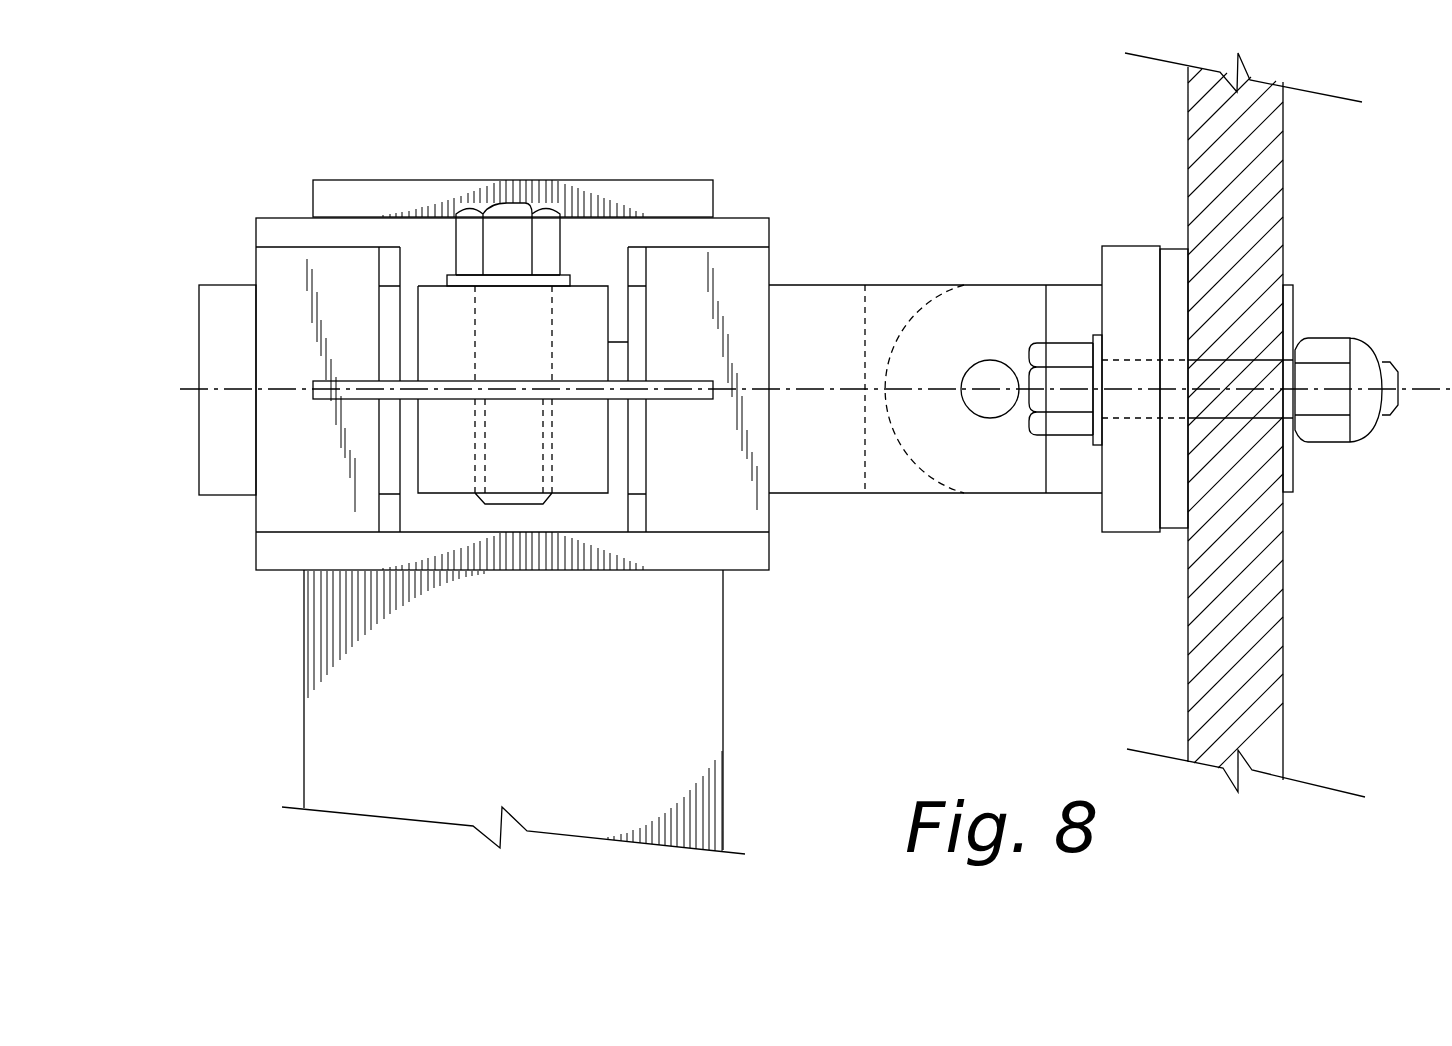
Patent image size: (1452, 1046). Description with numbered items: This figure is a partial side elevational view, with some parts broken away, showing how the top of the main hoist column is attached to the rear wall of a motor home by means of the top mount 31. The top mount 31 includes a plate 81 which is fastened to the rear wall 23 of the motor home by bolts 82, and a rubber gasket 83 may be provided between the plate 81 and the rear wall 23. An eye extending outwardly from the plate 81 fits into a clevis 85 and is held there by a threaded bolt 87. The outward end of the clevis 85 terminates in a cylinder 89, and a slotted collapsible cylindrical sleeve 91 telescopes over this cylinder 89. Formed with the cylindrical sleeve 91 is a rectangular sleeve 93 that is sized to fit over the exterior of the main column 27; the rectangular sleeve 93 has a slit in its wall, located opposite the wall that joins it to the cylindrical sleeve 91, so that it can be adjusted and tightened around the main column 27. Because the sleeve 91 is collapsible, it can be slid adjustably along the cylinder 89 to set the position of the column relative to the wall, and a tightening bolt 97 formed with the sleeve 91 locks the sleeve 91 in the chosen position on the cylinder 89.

The rear wall 23 is at (1273, 155).
The main column 27 is at (690, 706).
The top mount 31 is at (906, 253).
The plate 81 is at (1133, 278).
The bolts 82 is at (1063, 402).
The rubber gasket 83 is at (1177, 277).
The clevis 85 is at (1008, 308).
The threaded bolt 87 is at (975, 402).
The cylinder 89 is at (223, 306).
The slotted collapsible cylindrical sleeve 91 is at (295, 494).
The rectangular sleeve 93 is at (742, 232).
The tightening bolt 97 is at (503, 223).